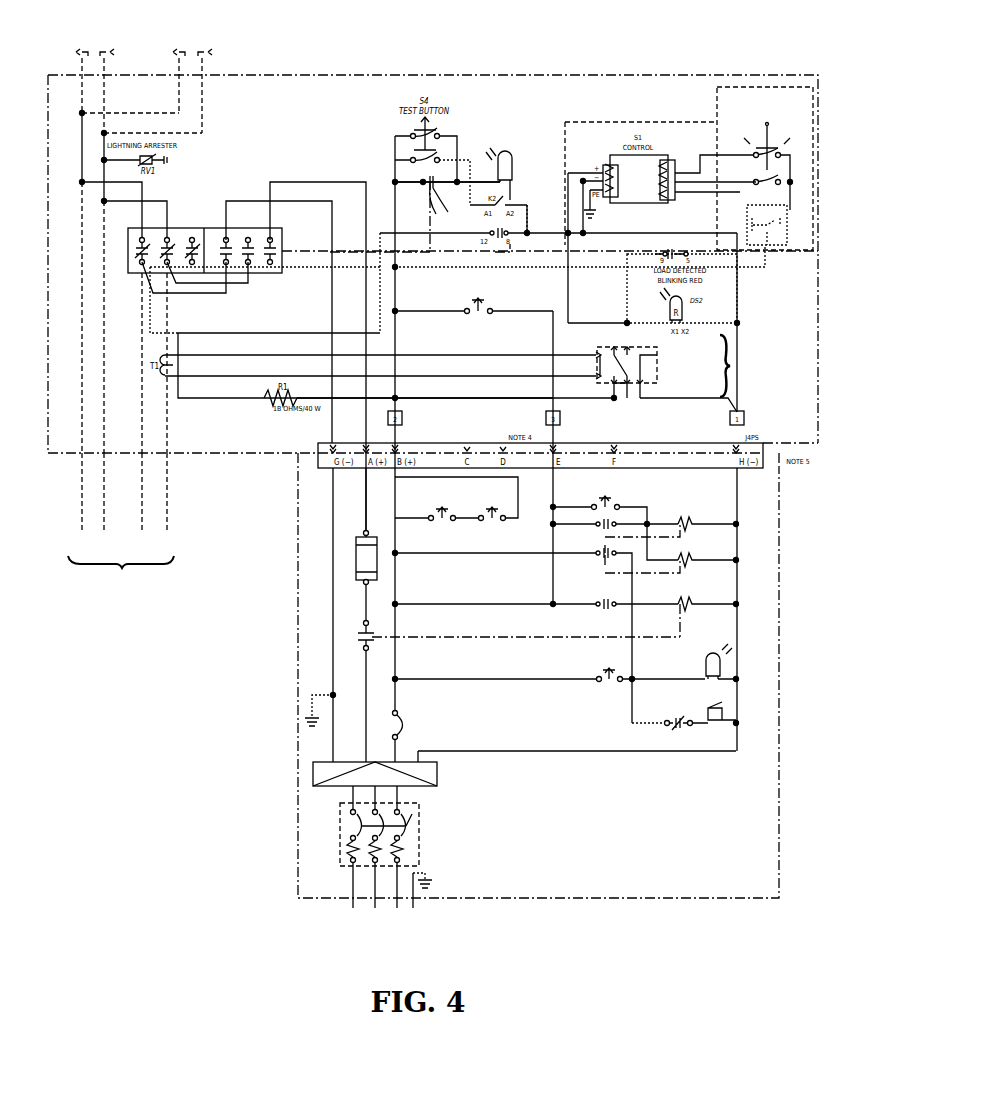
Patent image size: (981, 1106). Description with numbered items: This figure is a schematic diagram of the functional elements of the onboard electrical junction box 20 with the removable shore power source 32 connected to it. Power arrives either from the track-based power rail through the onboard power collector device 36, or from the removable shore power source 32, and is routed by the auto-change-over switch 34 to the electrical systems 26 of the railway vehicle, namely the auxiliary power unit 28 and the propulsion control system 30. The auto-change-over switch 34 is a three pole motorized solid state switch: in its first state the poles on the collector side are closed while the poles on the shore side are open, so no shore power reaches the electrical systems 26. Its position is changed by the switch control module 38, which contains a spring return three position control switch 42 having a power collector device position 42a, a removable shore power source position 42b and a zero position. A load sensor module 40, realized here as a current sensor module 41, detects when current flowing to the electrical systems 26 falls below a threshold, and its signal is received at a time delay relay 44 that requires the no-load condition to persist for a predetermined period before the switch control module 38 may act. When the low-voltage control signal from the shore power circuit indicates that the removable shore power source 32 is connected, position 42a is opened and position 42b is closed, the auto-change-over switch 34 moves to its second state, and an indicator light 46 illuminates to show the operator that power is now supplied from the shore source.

The onboard electrical junction box 20 is at (545, 111).
The electrical systems 26 is at (121, 583).
The auxiliary power unit (APU) 28 is at (170, 520).
The propulsion control system (PCS) 30 is at (82, 530).
The removable shore power source 32 is at (657, 882).
The auto-change-over switch 34 is at (212, 228).
The onboard power collector device 36 is at (144, 229).
The switch control module 38 is at (717, 87).
The load sensor module 40 is at (588, 338).
The current sensor module 41 is at (670, 355).
The spring return three position control switch 42 is at (777, 123).
The power collector device position 42a is at (410, 138).
The removable shore power source position 42b is at (410, 163).
The time delay relay 44 is at (798, 234).
The indicator light 46 is at (520, 147).